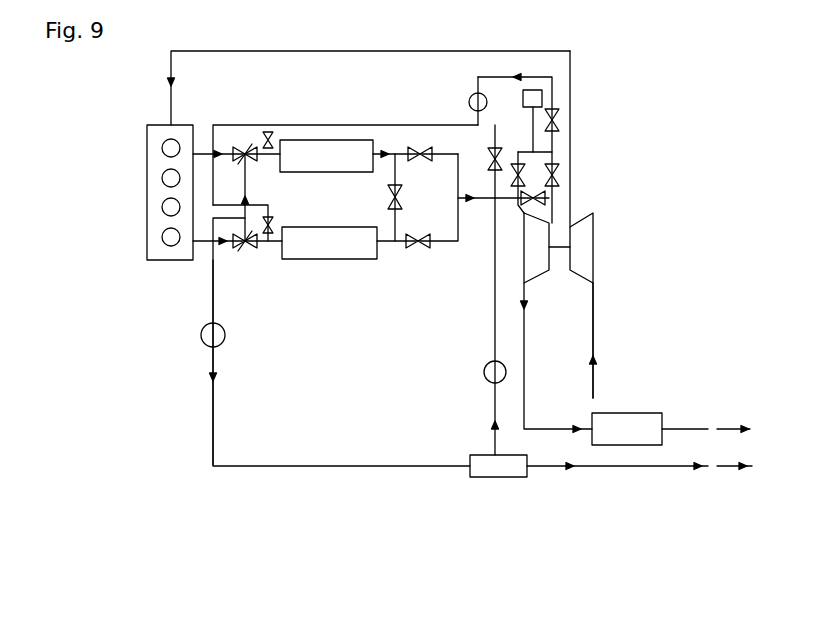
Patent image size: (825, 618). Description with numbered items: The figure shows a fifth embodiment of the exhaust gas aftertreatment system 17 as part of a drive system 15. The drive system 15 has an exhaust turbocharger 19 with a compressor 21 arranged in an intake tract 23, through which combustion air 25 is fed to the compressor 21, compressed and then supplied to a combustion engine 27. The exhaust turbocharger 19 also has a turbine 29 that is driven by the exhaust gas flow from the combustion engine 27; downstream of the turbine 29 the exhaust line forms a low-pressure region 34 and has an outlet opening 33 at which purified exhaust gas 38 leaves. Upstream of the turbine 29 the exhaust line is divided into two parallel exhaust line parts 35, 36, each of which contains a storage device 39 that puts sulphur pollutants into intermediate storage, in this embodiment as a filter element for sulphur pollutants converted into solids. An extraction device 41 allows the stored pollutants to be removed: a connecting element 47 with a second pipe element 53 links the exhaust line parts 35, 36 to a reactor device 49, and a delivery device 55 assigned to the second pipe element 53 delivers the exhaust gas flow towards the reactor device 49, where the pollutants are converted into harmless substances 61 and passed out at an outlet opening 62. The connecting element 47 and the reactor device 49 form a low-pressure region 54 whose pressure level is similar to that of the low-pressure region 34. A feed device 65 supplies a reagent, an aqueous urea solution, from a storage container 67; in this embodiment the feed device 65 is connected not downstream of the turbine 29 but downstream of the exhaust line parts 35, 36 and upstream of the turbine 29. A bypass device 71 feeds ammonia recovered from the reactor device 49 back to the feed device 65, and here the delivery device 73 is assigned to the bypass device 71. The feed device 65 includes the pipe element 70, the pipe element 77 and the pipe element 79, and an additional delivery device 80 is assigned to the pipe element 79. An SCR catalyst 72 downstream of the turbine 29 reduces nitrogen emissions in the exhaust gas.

The drive system 15 is at (748, 85).
The exhaust gas aftertreatment system 17 is at (364, 337).
The exhaust turbocharger 19 is at (585, 206).
The compressor 21 is at (583, 257).
The intake tract 23 is at (535, 51).
The combustion air 25 is at (595, 390).
The combustion engine 27 is at (150, 157).
The turbine 29 is at (557, 358).
The outlet opening 33 is at (712, 415).
The low-pressure region 34 is at (701, 348).
The exhaust line part 35 is at (392, 146).
The exhaust line part 36 is at (308, 280).
The purified exhaust gas 38 is at (735, 427).
The storage device 39 is at (334, 160).
The extraction device 41 is at (172, 346).
The connecting element 47 is at (174, 488).
The reactor device 49 is at (495, 468).
The second pipe element 53 is at (210, 431).
The low-pressure region 54 is at (530, 562).
The delivery device 55 is at (205, 325).
The harmless substances 61 is at (730, 468).
The outlet opening 62 is at (698, 476).
The feed device 65 is at (602, 480).
The storage container 67 is at (523, 100).
The pipe element 70 is at (292, 125).
The bypass device 71 is at (494, 337).
The SCR catalyst 72 is at (656, 424).
The delivery device 73 is at (532, 135).
The pipe element 77 is at (508, 217).
The pipe element 79 is at (560, 90).
The delivery device 80 is at (468, 96).